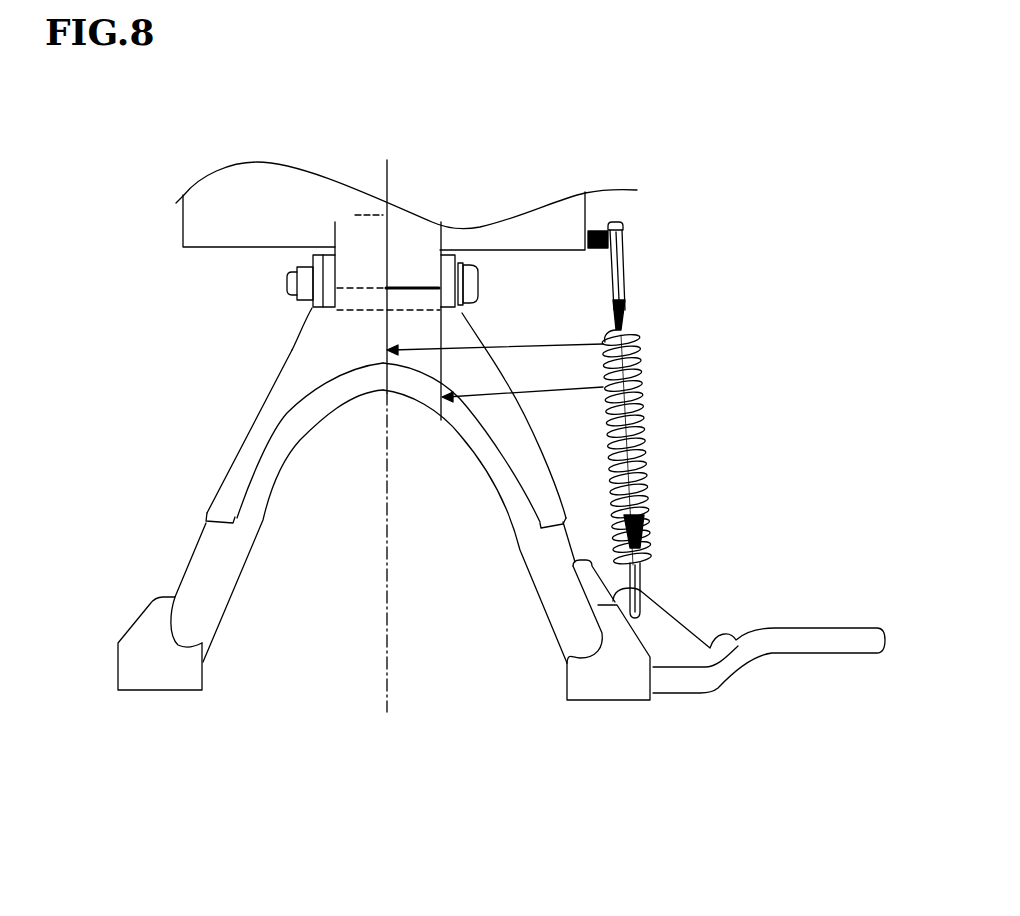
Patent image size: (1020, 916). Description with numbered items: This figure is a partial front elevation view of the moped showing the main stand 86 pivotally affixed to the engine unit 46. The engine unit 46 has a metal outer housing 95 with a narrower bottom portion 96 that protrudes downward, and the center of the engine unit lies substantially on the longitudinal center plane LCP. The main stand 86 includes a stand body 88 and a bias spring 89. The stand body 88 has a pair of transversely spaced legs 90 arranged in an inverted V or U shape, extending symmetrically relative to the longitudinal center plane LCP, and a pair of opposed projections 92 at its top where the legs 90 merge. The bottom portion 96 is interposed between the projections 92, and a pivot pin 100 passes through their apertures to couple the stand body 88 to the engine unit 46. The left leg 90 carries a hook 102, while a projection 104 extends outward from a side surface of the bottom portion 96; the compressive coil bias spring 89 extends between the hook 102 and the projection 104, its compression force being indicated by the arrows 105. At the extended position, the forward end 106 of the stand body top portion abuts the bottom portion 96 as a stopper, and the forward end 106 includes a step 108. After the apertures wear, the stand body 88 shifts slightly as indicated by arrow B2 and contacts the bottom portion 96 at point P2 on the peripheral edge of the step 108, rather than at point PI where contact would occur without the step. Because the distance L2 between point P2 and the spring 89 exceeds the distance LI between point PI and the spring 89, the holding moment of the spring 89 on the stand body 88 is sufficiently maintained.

The engine unit 46 is at (160, 237).
The outer housing 95 is at (235, 183).
The bottom portion 96 is at (425, 225).
The step 108 is at (421, 274).
The pivot pin 100 is at (510, 277).
The projections 92 is at (297, 295).
The forward end 106 is at (312, 305).
The main stand 86 is at (384, 506).
The stand body 88 is at (222, 476).
The legs 90 is at (225, 598).
The hook 102 is at (668, 612).
The projection 104 is at (625, 231).
The arrows 105 is at (628, 283).
The bias spring 89 is at (650, 400).
The point P2 is at (393, 285).
The point P1 PI is at (462, 268).
The distance L2 is at (497, 348).
The distance L1 LI is at (527, 393).
The longitudinal center plane LCP is at (385, 608).
The arrow B2 is at (712, 757).